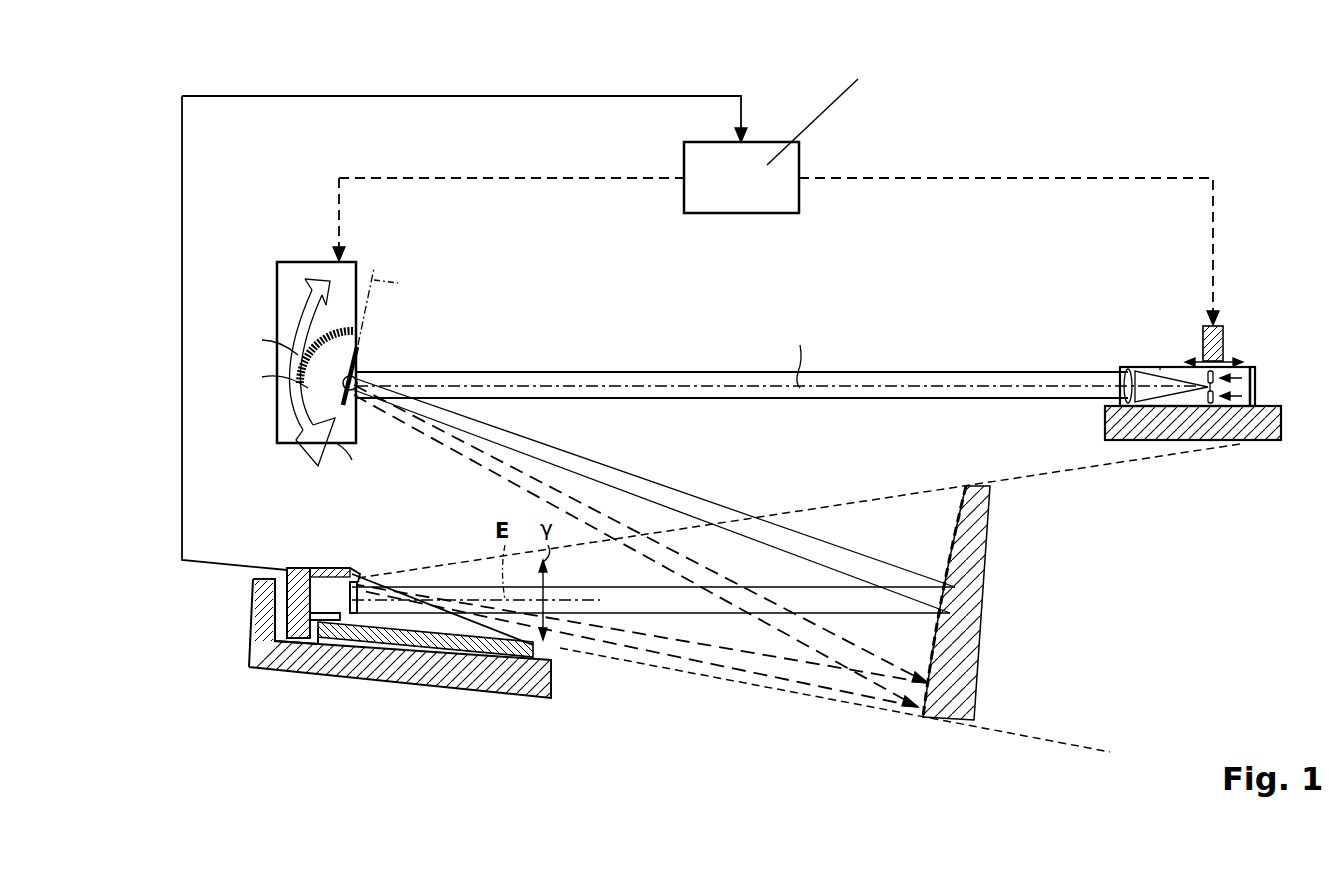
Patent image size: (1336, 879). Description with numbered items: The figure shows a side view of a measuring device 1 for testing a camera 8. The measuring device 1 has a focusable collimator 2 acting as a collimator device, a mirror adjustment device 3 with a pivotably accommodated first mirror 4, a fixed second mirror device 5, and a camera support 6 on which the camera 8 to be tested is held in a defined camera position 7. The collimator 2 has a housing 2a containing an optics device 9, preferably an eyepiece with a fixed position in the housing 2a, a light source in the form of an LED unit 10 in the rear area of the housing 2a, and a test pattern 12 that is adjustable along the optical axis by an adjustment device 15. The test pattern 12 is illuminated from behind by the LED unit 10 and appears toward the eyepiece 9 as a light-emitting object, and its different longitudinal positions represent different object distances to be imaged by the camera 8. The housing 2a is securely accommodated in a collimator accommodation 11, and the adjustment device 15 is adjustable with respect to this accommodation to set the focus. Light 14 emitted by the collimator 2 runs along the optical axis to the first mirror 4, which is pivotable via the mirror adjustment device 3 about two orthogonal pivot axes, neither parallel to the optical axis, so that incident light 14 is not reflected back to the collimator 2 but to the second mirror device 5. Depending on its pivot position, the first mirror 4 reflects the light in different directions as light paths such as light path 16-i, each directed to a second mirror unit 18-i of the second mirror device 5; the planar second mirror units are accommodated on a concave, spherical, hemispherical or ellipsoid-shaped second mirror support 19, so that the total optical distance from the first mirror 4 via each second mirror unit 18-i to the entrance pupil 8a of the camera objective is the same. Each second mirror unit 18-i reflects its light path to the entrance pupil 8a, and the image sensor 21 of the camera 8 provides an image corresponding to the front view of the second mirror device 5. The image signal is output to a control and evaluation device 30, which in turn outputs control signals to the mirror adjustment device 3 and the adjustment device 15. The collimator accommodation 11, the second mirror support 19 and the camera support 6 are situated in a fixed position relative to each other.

The measuring device 1 is at (1248, 149).
The focusable collimator 2 is at (1248, 367).
The housing 2a is at (1158, 367).
The mirror adjustment device 3 is at (348, 262).
The first mirror 4 is at (362, 349).
The second mirror device 5 is at (962, 546).
The camera support 6 is at (427, 672).
The camera position 7 is at (368, 652).
The camera 8 is at (295, 568).
The entrance pupil 8a is at (353, 580).
The optics device 9 is at (1127, 368).
The LED unit 10 is at (1253, 368).
The collimator accommodation 11 is at (1262, 432).
The test pattern 12 is at (1213, 408).
The light 14 is at (722, 380).
The adjustment device 15 is at (1215, 325).
The light path 16-i is at (640, 472).
The second mirror unit 18-i is at (948, 592).
The second mirror support 19 is at (975, 528).
The image sensor 21 is at (318, 640).
The control and evaluation device 30 is at (741, 213).